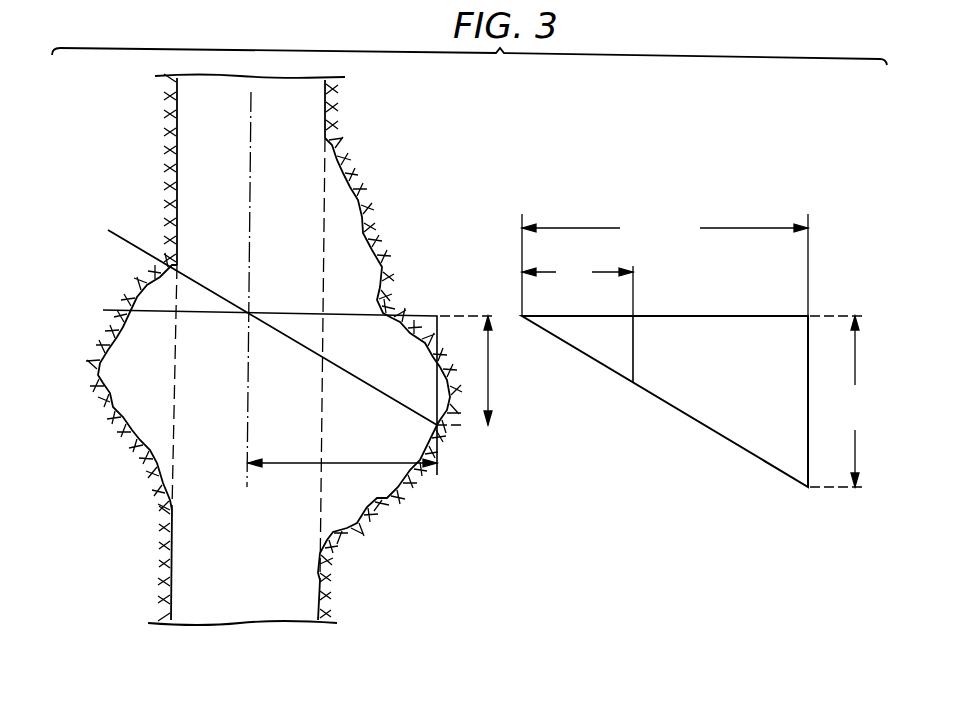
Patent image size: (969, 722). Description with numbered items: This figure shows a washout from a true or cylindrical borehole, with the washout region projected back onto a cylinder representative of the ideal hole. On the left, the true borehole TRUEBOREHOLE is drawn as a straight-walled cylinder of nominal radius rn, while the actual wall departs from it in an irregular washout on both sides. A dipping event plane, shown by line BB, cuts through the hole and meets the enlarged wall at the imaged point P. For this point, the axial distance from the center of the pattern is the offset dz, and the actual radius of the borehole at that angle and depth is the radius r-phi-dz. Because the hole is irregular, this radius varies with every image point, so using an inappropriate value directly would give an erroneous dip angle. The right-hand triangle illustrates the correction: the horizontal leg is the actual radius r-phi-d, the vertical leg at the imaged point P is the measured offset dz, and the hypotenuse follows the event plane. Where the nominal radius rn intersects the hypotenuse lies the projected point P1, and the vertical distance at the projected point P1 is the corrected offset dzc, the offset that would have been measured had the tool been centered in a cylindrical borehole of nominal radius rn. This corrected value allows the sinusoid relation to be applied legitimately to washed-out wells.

The dipping event plane trace BB is at (271, 316).
The imaged point P is at (450, 438).
The projected point P1 is at (665, 401).
The δz distance dz is at (470, 370).
The corrected δzc distance dzc is at (347, 344).
The borehole radius r(φ,δz) r-phi-dz is at (355, 463).
The borehole radius r(φ,δ) r-phi-d is at (665, 265).
The nominal radius rn is at (577, 287).
The true borehole TRUEBOREHOLE is at (318, 690).